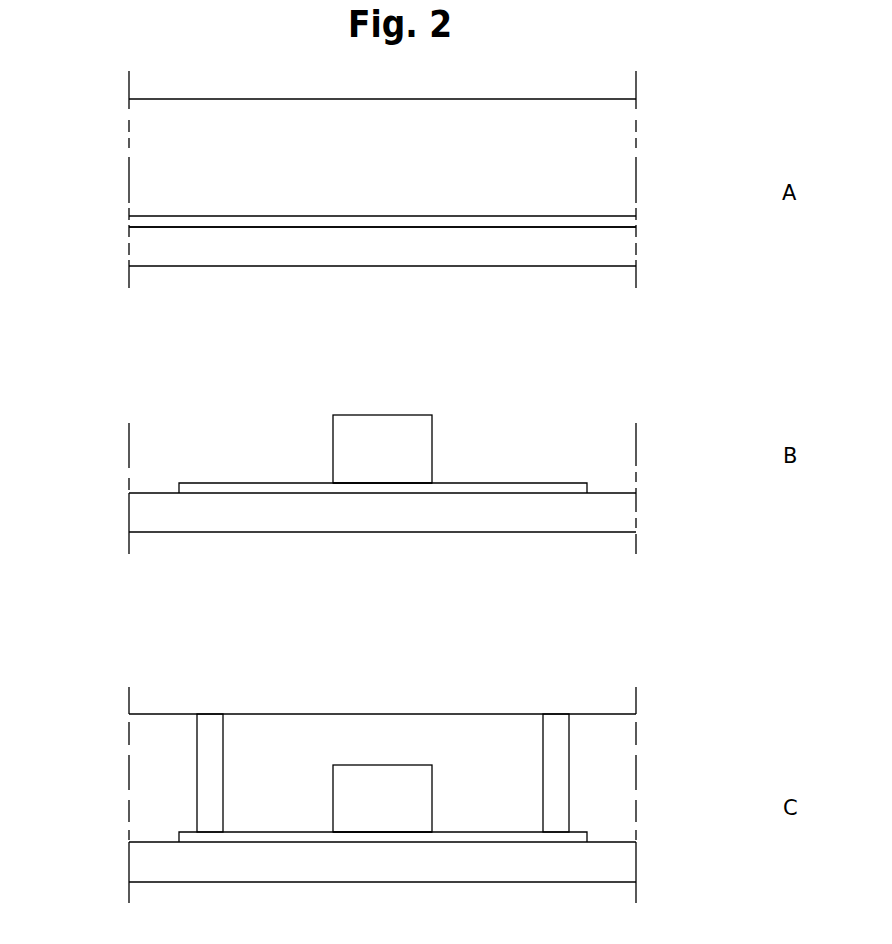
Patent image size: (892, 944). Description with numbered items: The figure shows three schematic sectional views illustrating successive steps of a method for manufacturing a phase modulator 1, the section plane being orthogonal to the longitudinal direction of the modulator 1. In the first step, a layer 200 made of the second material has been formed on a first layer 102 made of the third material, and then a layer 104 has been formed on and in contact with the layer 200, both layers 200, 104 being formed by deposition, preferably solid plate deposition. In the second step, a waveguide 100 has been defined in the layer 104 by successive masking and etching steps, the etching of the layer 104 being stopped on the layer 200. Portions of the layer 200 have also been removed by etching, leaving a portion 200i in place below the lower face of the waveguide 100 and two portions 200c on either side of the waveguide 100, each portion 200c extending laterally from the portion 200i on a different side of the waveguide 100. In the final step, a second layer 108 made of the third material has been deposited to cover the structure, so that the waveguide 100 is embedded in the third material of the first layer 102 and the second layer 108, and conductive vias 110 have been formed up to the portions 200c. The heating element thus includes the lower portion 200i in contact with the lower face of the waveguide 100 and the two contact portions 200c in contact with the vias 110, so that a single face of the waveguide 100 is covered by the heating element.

The modulator 1 is at (115, 695).
The waveguide 100 is at (405, 455).
The first layer 102 is at (625, 247).
The layer 104 is at (607, 152).
The second layer 108 is at (617, 747).
The conductive vias 110 is at (207, 713).
The layer 200 is at (633, 217).
The contact portions 200c is at (277, 490).
The lower portion 200i is at (392, 488).